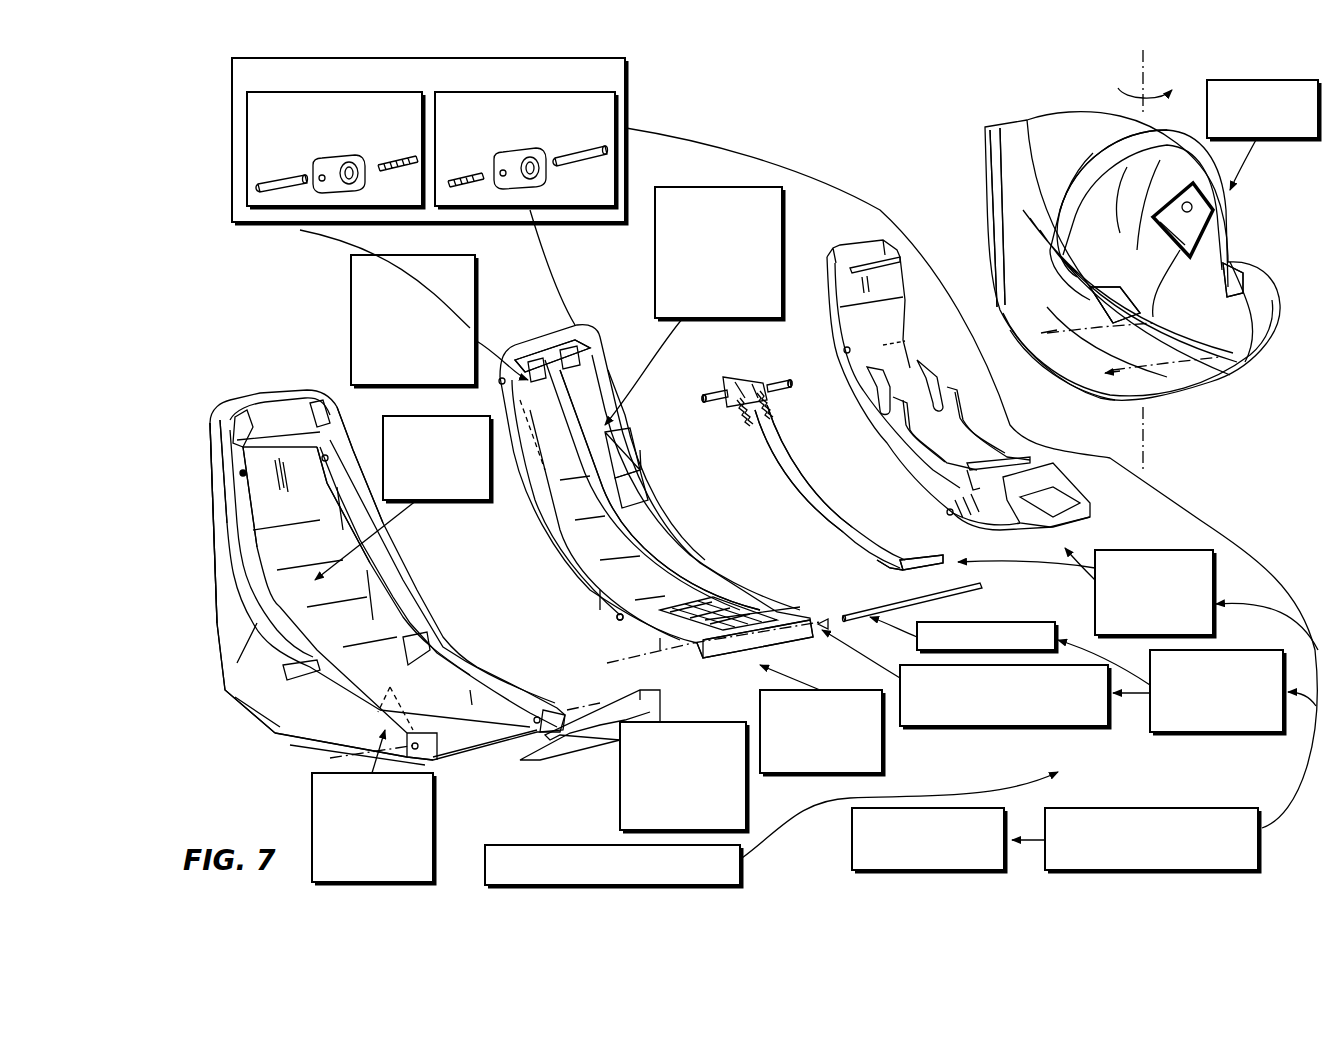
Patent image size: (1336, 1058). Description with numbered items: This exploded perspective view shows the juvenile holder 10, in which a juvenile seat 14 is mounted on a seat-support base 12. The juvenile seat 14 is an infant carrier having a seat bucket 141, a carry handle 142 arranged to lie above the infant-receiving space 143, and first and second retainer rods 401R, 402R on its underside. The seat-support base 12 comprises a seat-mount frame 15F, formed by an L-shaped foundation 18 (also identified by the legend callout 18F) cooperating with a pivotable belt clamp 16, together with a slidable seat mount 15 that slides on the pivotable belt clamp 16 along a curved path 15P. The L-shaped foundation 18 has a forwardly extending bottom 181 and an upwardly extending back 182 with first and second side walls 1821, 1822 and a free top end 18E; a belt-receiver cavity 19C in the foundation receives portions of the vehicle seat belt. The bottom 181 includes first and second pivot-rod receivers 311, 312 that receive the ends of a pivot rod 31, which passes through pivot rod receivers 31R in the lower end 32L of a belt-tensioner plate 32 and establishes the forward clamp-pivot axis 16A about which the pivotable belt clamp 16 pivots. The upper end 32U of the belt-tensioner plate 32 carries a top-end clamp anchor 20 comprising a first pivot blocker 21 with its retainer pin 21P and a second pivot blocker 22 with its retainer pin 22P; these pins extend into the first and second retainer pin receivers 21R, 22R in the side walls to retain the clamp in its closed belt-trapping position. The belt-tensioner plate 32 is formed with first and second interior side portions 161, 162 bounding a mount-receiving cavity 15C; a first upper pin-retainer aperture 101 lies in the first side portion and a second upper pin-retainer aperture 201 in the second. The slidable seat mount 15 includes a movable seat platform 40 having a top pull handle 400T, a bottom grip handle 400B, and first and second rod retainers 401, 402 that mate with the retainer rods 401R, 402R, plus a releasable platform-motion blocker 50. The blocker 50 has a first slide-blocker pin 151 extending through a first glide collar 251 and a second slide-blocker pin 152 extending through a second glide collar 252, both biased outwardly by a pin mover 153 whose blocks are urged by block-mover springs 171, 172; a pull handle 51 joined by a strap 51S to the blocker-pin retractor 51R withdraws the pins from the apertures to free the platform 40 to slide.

The juvenile holder 10 is at (240, 272).
The seat-support base 12 is at (1260, 850).
The juvenile seat 14 is at (1207, 92).
The seat bucket 141 is at (970, 228).
The carry handle 142 is at (1077, 143).
The infant-receiving space 143 is at (1200, 257).
The first retainer rod 401R is at (1247, 287).
The second retainer rod 402R is at (1180, 300).
The slidable seat mount 15 is at (1115, 550).
The seat-mount frame 15F is at (575, 845).
The curved path 15P is at (647, 432).
The mount-receiving cavity 15C is at (657, 572).
The pivotable belt clamp 16 is at (1150, 722).
The forward clamp-pivot axis 16A is at (882, 742).
The L-shaped foundation 18 is at (745, 868).
The L-shaped foundation label 18F is at (929, 840).
The top end of L-shaped foundation 18E is at (210, 470).
The forwardly extending bottom 181 is at (290, 740).
The upwardly extending back 182 is at (213, 658).
The first side wall 1821 is at (340, 473).
The second side wall 1822 is at (228, 575).
The belt-receiver cavity 19C is at (435, 500).
The top-end clamp anchor 20 is at (626, 66).
The first pivot blocker 21 is at (616, 110).
The retainer pin of first pivot blocker 21P is at (628, 143).
The first retainer pin receiver 21R is at (323, 452).
The second pivot blocker 22 is at (247, 135).
The retainer pin of second pivot blocker 22P is at (270, 178).
The second retainer pin receiver 22R is at (233, 410).
The first upper pin-retainer aperture 101 is at (655, 265).
The second upper pin-retainer aperture 201 is at (350, 320).
The pivot rod 31 is at (985, 610).
The first pivot-rod receiver 311 is at (434, 830).
The second pivot-rod receiver 312 is at (747, 812).
The pivot rod receiver 31R is at (695, 650).
The belt-tensioner plate 32 is at (980, 727).
The upper end of belt-tensioner plate 32U is at (566, 337).
The lower end of belt-tensioner plate 32L is at (770, 645).
The movable seat platform 40 is at (865, 447).
The top pull handle 400T is at (882, 247).
The bottom grip handle 400B is at (1088, 512).
The first rod retainer 401 is at (1010, 460).
The second rod retainer 402 is at (953, 373).
The releasable platform-motion blocker 50 is at (822, 483).
The pull handle 51 is at (920, 556).
The strap 51S is at (820, 500).
The blocker-pin retractor 51R is at (793, 328).
The first slide-blocker pin 151 is at (795, 397).
The second slide-blocker pin 152 is at (722, 398).
The pin mover 153 is at (815, 528).
The first interior side portion 161 is at (620, 398).
The second interior side portion 162 is at (560, 522).
The block-mover spring 171 is at (772, 413).
The block-mover spring 172 is at (745, 415).
The first glide collar 251 is at (782, 398).
The second glide collar 252 is at (715, 403).